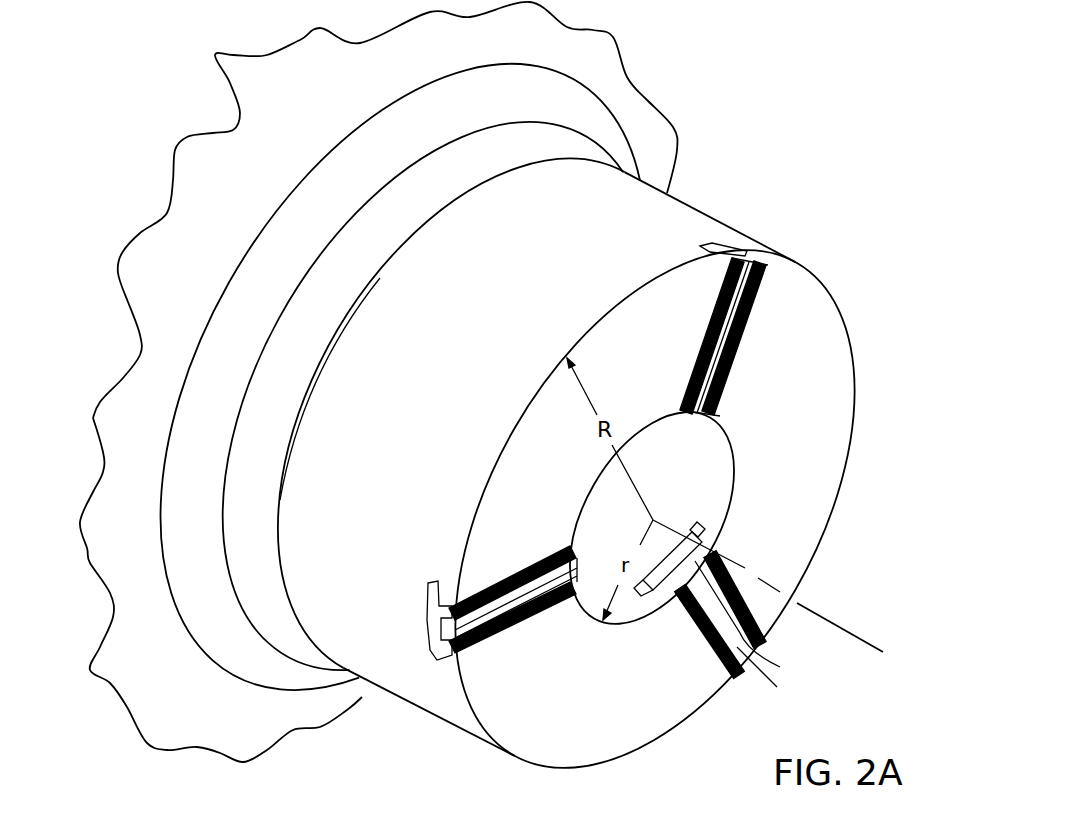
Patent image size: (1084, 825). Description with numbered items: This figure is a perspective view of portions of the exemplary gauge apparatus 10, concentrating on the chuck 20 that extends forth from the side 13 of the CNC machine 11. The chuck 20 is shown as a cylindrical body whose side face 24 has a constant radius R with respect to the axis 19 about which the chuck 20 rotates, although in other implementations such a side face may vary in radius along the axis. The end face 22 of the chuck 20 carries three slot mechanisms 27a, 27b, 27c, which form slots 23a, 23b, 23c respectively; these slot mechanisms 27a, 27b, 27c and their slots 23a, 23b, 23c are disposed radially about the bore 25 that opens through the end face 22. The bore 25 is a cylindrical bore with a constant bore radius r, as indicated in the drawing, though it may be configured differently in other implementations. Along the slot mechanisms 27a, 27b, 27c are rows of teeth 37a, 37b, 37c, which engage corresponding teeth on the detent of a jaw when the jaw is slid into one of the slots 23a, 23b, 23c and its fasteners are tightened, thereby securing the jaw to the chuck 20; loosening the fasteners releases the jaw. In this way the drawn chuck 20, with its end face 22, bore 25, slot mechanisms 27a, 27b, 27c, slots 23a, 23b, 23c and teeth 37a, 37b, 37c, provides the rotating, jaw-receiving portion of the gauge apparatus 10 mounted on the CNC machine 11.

The gauge apparatus 10 is at (873, 53).
The CNC machine 11 is at (140, 415).
The side 13 is at (147, 649).
The axis 19 is at (827, 613).
The chuck 20 is at (403, 685).
The end face 22 is at (613, 733).
The slot 23a is at (750, 260).
The slot 23b is at (423, 617).
The slot 23c is at (743, 635).
The side face 24 is at (443, 720).
The bore 25 is at (690, 498).
The slot mechanism 27a is at (730, 243).
The slot mechanism 27b is at (432, 625).
The slot mechanism 27c is at (740, 645).
The teeth 37a is at (757, 307).
The teeth 37b is at (443, 658).
The teeth 37c is at (740, 677).